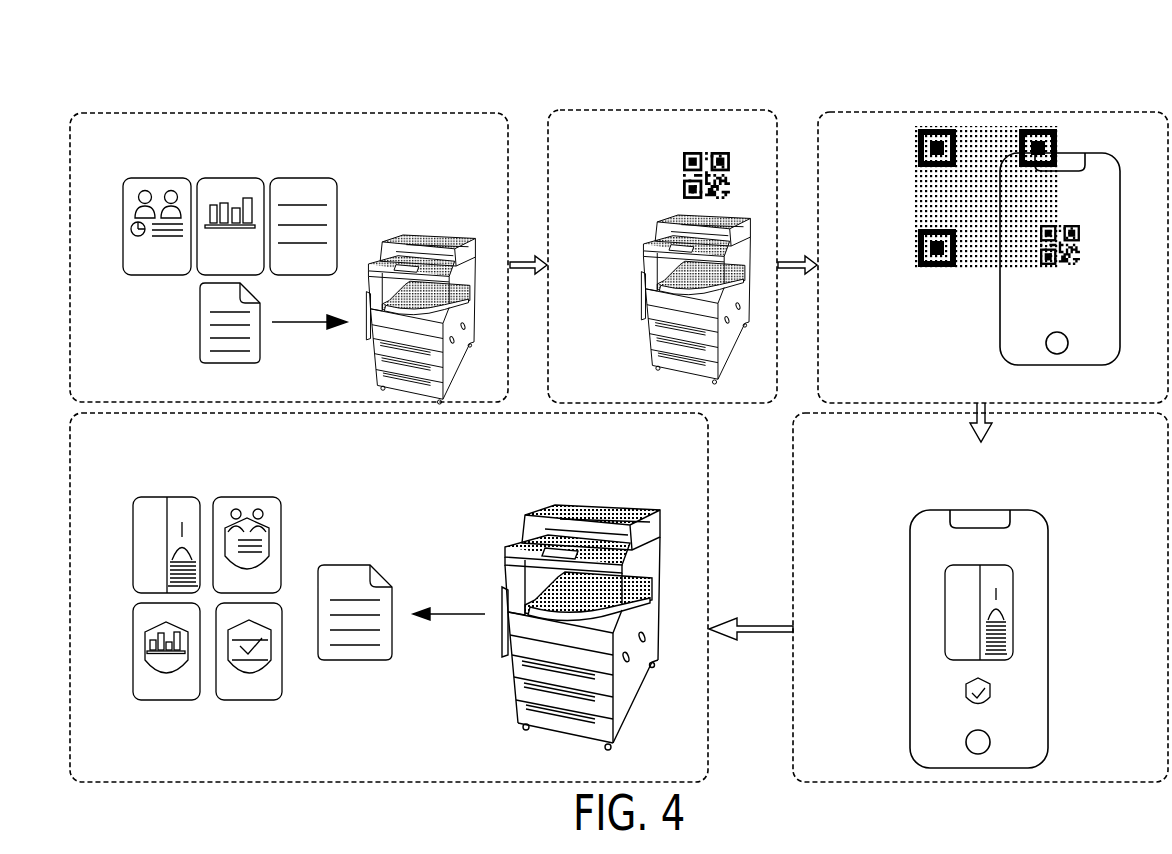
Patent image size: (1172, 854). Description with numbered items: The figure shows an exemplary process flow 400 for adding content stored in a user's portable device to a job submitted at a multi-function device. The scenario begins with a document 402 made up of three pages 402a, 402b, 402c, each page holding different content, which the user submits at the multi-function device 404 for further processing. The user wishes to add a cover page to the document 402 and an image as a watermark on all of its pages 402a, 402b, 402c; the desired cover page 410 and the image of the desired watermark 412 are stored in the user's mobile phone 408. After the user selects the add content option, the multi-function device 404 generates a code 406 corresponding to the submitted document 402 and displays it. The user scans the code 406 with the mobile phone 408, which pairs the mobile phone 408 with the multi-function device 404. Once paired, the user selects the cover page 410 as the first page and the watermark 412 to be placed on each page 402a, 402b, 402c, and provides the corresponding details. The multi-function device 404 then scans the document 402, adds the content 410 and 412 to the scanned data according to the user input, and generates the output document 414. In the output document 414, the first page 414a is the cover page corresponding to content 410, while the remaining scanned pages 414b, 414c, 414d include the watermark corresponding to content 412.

The process flow 400 is at (645, 98).
The document 402 is at (198, 348).
The first page 402a is at (168, 180).
The second page 402b is at (242, 180).
The third page 402c is at (315, 180).
The multi-function device 404 is at (375, 370).
The code 406 is at (683, 172).
The mobile phone 408 is at (1000, 332).
The cover page 410 is at (945, 583).
The image of the watermark 412 is at (967, 700).
The output document 414 is at (355, 565).
The first page of output document 414a is at (167, 497).
The scanned page 414b is at (248, 497).
The scanned page 414c is at (173, 702).
The scanned page 414d is at (250, 702).